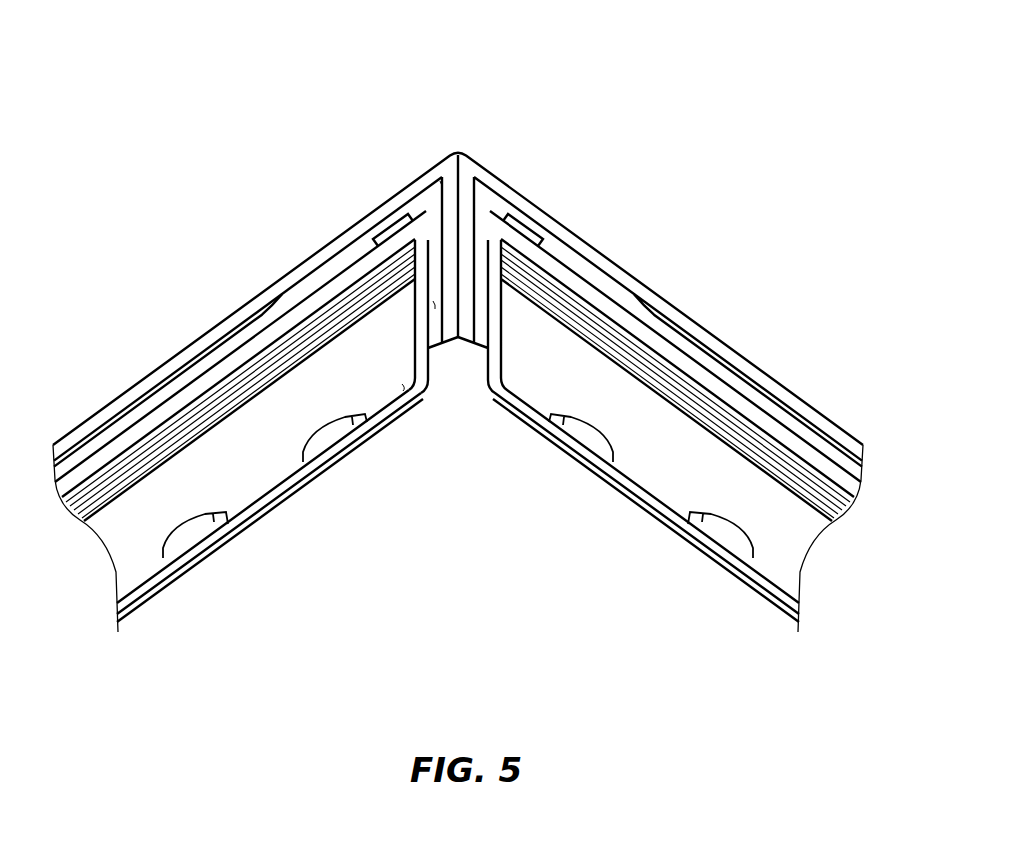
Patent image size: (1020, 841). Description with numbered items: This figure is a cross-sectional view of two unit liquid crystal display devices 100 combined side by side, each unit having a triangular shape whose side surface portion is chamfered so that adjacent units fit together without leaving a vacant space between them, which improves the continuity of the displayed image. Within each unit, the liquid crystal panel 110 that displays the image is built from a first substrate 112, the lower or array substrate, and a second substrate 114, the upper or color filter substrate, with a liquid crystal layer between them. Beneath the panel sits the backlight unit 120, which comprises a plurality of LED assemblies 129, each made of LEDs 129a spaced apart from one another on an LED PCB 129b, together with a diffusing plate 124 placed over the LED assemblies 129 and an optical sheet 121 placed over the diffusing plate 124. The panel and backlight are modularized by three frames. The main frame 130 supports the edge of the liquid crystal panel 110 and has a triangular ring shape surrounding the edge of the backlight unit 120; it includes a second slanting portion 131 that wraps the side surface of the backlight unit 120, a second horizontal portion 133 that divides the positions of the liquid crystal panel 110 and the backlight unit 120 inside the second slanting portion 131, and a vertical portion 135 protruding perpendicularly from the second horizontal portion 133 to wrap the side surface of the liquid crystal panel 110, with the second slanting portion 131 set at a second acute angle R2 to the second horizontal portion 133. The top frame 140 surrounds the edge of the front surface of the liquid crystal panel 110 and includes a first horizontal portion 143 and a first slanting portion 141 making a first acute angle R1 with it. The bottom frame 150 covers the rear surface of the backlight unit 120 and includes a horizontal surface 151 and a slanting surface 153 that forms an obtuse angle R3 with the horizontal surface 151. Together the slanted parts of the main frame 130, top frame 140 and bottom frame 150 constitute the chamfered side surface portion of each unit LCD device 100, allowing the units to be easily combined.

The unit liquid crystal display device 100 is at (458, 367).
The liquid crystal panel 110 is at (240, 354).
The first substrate 112 is at (181, 392).
The second substrate 114 is at (120, 428).
The backlight unit 120 is at (242, 504).
The optical sheet 121 is at (293, 445).
The diffusing plate 124 is at (250, 398).
The LED assembly 129 is at (242, 562).
The LED 129a is at (205, 535).
The LED PCB 129b is at (258, 645).
The main frame 130 is at (248, 304).
The second slanting portion 131 is at (318, 318).
The second horizontal portion 133 is at (407, 205).
The vertical portion 135 is at (373, 228).
The top frame 140 is at (459, 171).
The first slanting portion 141 is at (477, 178).
The first horizontal portion 143 is at (418, 182).
The bottom frame 150 is at (305, 427).
The horizontal surface 151 is at (271, 502).
The slanting surface 153 is at (430, 366).
The first acute angle R1 is at (437, 191).
The second acute angle R2 is at (435, 303).
The obtuse angle R3 is at (398, 381).